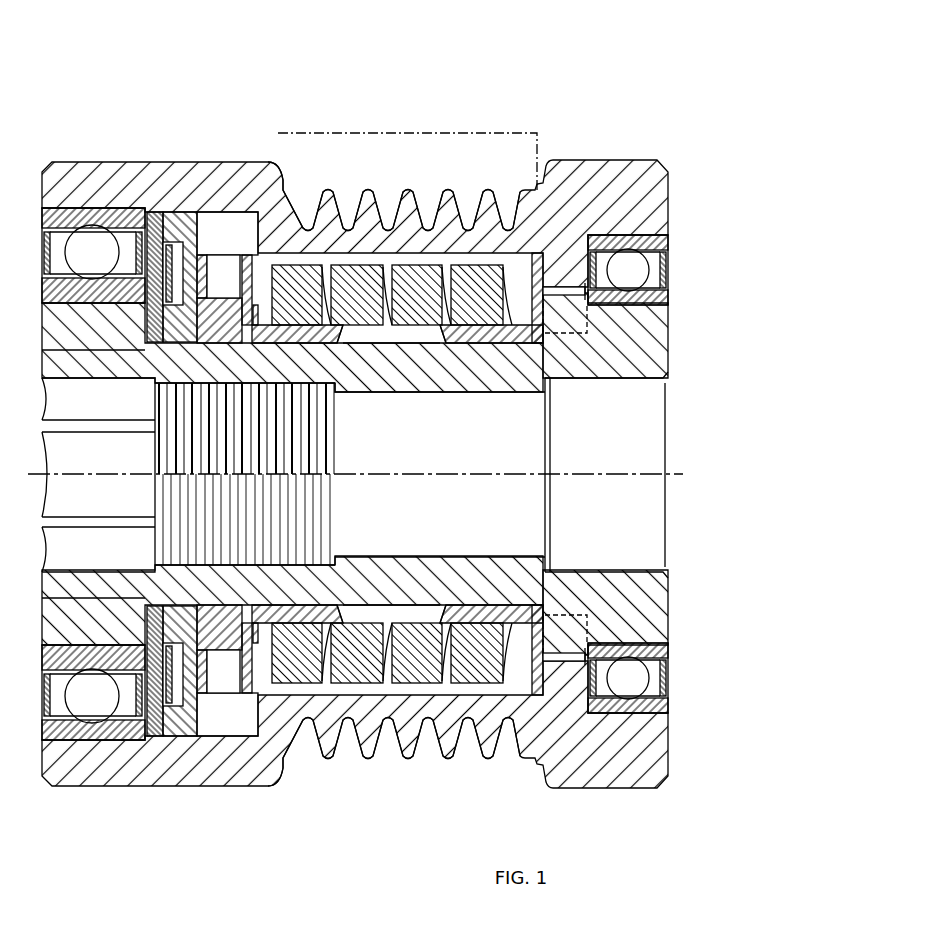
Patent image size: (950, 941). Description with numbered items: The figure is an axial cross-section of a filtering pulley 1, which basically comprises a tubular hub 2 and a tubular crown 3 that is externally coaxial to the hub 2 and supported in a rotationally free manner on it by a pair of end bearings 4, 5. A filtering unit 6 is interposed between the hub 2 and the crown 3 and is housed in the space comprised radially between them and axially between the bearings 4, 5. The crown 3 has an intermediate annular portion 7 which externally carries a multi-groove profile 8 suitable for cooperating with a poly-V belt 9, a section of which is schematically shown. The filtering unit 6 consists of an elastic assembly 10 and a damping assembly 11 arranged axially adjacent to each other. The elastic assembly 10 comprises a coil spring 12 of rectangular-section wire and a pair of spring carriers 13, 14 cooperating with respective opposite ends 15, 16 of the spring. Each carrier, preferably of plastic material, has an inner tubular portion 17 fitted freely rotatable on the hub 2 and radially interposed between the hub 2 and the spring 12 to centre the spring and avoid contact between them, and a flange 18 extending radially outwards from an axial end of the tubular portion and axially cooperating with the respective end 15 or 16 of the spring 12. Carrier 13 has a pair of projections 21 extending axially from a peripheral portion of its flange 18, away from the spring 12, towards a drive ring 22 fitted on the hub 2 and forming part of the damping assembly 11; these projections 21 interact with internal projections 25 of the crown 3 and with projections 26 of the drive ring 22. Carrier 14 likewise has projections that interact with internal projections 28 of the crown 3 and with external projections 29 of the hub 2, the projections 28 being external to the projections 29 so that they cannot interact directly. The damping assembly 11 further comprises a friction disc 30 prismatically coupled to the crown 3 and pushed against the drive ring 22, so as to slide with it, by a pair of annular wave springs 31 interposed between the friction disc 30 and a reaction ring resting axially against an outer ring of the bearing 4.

The filtering pulley 1 is at (113, 113).
The tubular hub 2 is at (598, 612).
The tubular crown 3 is at (594, 155).
The end bearing 4 is at (90, 238).
The end bearing 5 is at (628, 684).
The filtering unit 6 is at (345, 752).
The intermediate annular portion 7 is at (455, 715).
The multi-groove profile 8 is at (464, 195).
The poly-V belt 9 is at (505, 158).
The elastic assembly 10 is at (364, 253).
The damping assembly 11 is at (204, 227).
The coil spring 12 is at (374, 688).
The spring carrier 13 is at (259, 642).
The spring carrier 14 is at (530, 692).
The spring end 15 is at (280, 643).
The spring end 16 is at (504, 628).
The inner tubular portion 17 is at (350, 362).
The flange 18 is at (251, 262).
The projections 21 is at (233, 668).
The drive ring 22 is at (202, 703).
The internal projections 25 is at (240, 228).
The projections 26 is at (223, 272).
The internal projections 28 is at (564, 268).
The external projections 29 is at (568, 332).
The friction disc 30 is at (178, 213).
The annular wave springs 31 is at (180, 702).